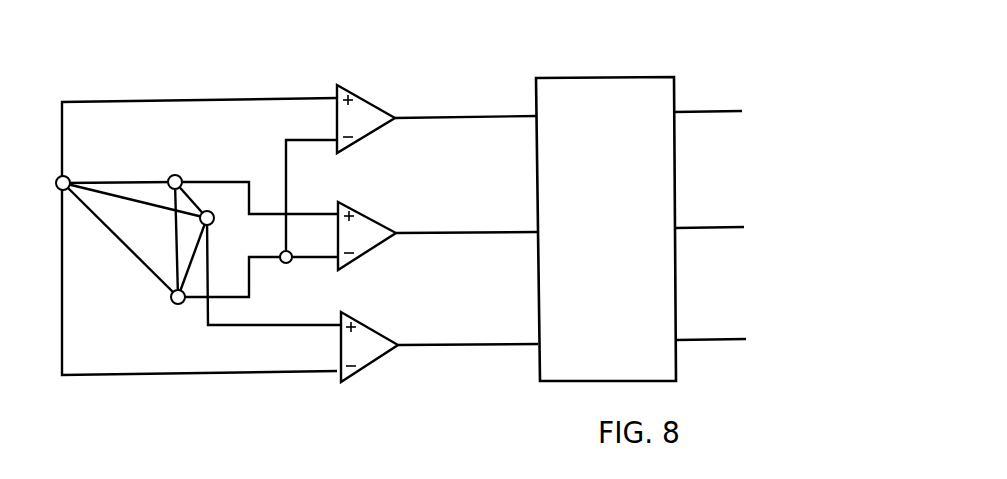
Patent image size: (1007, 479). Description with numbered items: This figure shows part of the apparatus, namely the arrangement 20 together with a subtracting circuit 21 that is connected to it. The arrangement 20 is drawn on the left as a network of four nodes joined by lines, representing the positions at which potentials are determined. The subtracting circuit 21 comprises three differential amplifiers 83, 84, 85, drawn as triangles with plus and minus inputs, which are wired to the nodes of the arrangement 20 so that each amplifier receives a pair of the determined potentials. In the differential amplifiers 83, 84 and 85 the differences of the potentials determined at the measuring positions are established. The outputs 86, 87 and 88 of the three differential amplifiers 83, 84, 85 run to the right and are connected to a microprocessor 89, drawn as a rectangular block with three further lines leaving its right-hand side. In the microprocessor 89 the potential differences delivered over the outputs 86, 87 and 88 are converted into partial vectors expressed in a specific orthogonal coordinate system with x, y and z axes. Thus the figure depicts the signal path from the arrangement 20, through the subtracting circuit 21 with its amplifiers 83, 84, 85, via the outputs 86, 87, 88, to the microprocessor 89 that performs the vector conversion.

The arrangement 20 is at (128, 272).
The subtracting circuit 21 is at (386, 377).
The differential amplifier 83 is at (350, 97).
The differential amplifier 84 is at (353, 214).
The differential amplifier 85 is at (357, 329).
The output 86 is at (397, 117).
The output 87 is at (399, 232).
The output 88 is at (401, 345).
The microprocessor 89 is at (565, 87).